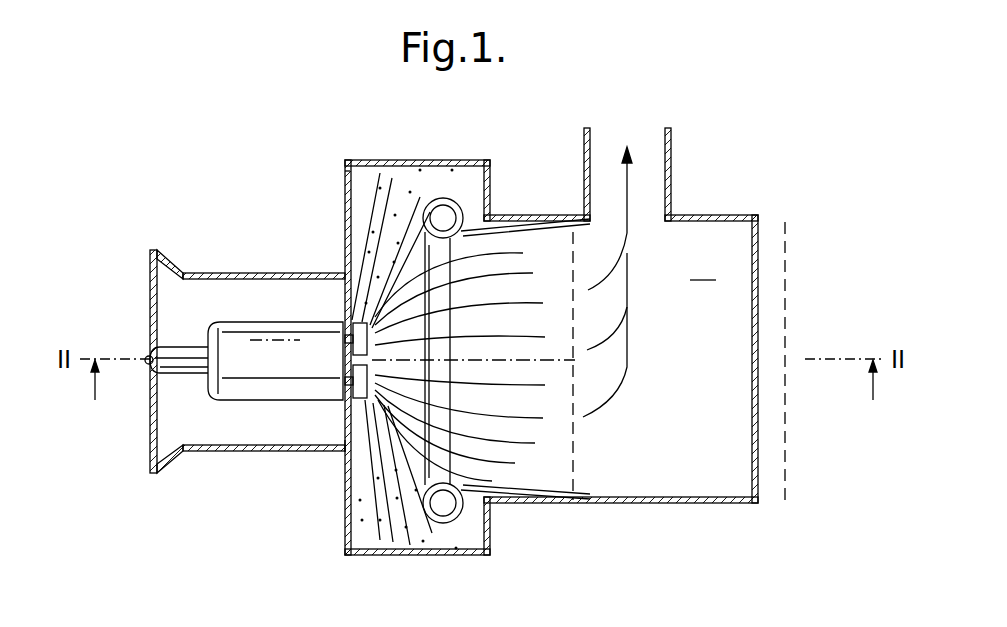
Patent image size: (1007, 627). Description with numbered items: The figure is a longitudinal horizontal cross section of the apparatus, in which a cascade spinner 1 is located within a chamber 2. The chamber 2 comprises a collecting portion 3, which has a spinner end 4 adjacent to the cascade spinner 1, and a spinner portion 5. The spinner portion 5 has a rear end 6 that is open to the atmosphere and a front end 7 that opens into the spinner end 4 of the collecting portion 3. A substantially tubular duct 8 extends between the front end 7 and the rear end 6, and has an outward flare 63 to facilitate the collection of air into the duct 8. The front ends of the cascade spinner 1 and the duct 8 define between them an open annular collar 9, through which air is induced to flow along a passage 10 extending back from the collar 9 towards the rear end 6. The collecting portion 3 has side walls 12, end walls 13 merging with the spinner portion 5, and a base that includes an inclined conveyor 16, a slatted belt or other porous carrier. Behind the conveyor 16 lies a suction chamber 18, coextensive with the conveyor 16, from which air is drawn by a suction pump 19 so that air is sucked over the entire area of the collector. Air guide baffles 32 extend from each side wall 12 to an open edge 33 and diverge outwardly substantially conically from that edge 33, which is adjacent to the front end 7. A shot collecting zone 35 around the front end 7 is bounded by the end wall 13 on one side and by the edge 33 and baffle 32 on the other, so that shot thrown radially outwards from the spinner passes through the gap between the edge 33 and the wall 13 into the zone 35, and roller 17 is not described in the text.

The cascade spinner 1 is at (285, 310).
The chamber 2 is at (470, 150).
The collecting portion 3 is at (530, 245).
The spinner end 4 is at (348, 228).
The spinner portion 5 is at (236, 286).
The rear end 6 is at (150, 278).
The front end 7 is at (343, 433).
The tubular duct 8 is at (254, 456).
The open annular collar 9 is at (340, 413).
The passage 10 is at (218, 418).
The side walls 12 is at (610, 504).
The end walls 13 is at (350, 196).
The inclined conveyor 16 is at (573, 461).
The lower roller 17 is at (443, 515).
The suction chamber 18 is at (711, 315).
The suction pump 19 is at (627, 128).
The air guide baffles 32 is at (512, 498).
The open edge 33 is at (420, 205).
The shot collecting zone 35 is at (428, 180).
The outward flare 63 is at (163, 258).